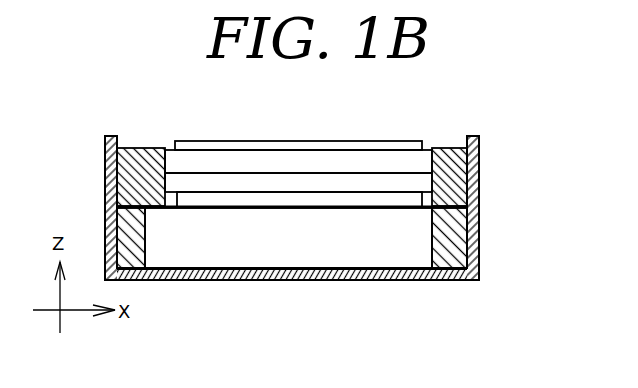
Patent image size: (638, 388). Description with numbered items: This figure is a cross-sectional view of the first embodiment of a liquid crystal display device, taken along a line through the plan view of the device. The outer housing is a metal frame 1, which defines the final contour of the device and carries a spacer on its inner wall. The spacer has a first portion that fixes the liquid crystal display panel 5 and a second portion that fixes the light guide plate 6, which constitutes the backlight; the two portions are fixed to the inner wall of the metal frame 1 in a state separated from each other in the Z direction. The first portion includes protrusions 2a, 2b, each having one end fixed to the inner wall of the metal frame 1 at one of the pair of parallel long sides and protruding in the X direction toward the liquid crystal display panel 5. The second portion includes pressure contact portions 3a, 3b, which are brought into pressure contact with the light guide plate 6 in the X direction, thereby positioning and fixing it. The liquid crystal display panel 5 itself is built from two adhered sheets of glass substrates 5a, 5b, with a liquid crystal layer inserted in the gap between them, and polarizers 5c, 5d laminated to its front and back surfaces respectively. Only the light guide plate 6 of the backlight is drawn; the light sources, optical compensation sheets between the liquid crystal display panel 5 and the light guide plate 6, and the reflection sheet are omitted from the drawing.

The metal frame 1 is at (453, 272).
The protrusion 2a is at (117, 168).
The protrusion 2b is at (462, 163).
The pressure contact portion 3a is at (117, 232).
The pressure contact portion 3b is at (453, 252).
The liquid crystal display panel 5 is at (297, 140).
The glass substrate 5a is at (227, 187).
The glass substrate 5b is at (265, 160).
The polarizer 5c is at (202, 198).
The polarizer 5d is at (310, 147).
The light guide plate 6 is at (415, 235).